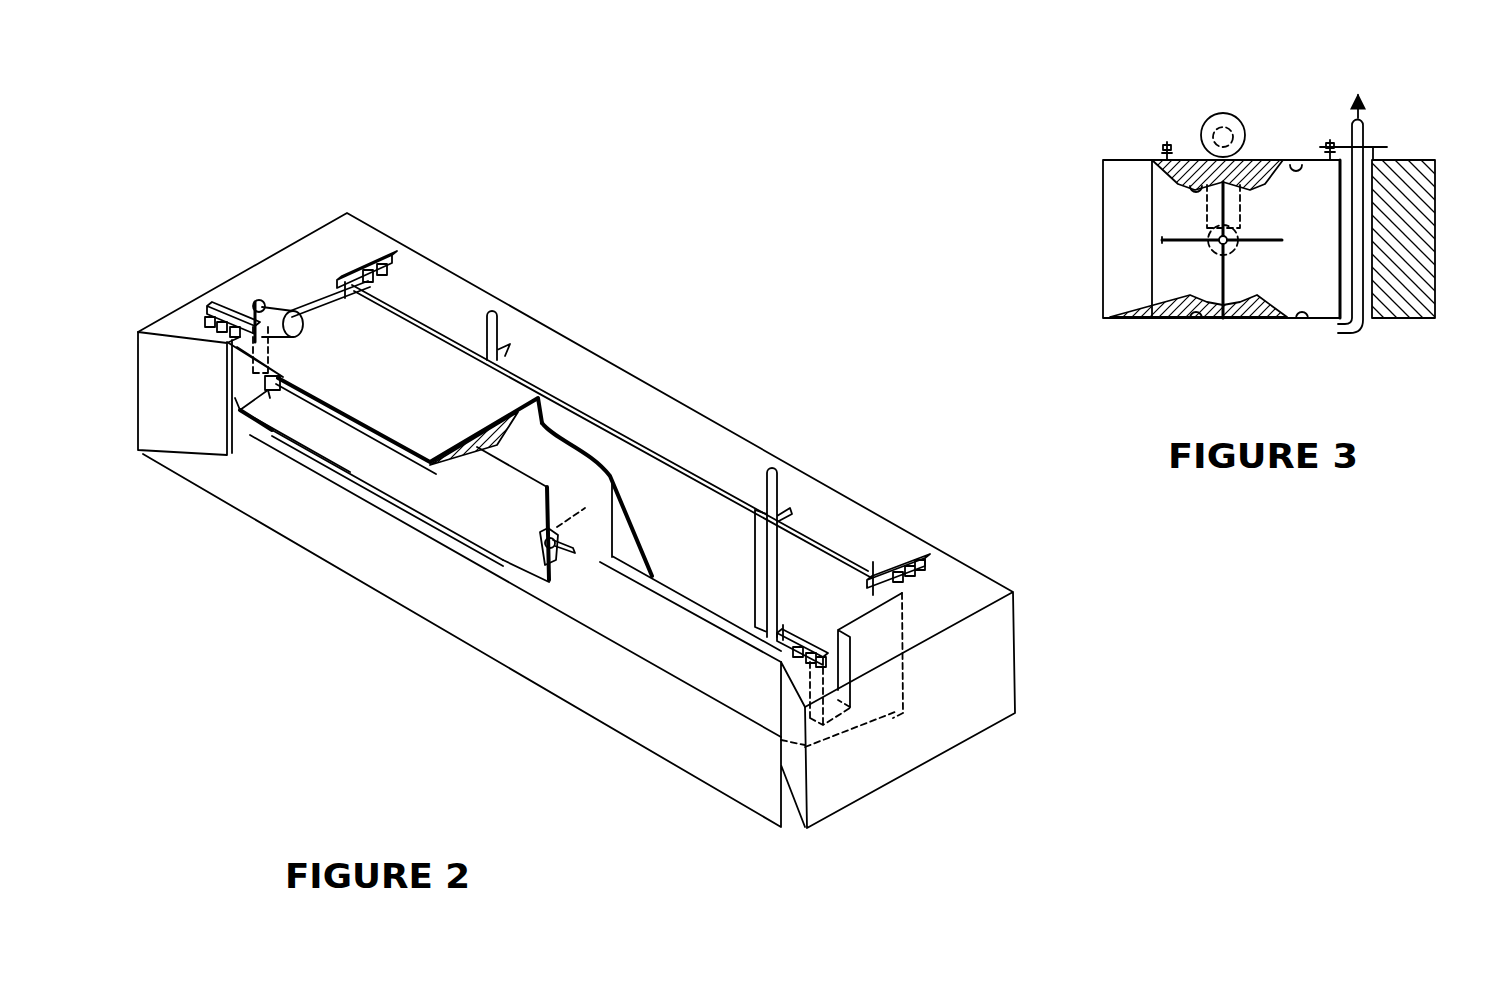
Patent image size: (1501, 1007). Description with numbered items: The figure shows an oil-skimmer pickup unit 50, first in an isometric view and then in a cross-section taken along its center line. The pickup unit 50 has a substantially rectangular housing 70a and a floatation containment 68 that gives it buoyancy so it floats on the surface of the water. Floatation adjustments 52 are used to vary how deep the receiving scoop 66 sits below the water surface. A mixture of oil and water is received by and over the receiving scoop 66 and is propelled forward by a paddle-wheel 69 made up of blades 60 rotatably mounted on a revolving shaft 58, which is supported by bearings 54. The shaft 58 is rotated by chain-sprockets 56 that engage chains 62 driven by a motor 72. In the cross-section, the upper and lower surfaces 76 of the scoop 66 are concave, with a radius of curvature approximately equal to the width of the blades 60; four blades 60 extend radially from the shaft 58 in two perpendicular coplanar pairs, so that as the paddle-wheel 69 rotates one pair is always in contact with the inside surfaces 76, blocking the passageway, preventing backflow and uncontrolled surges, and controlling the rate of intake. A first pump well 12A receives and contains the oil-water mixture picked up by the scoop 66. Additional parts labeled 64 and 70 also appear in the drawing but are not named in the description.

In FIG. 2, the pickup unit 50 is at (732, 350).
In FIG. 3, the pickup unit 50 is at (1395, 70).
In FIG. 2, the floatation adjustments 52 is at (198, 311).
In FIG. 3, the floatation adjustments 52 is at (1162, 142).
In FIG. 2, the bearings 54 is at (496, 336).
In FIG. 2, the chain-sprockets 56 is at (253, 300).
In FIG. 3, the chain-sprockets 56 is at (1233, 118).
In FIG. 2, the revolving shaft 58 is at (572, 555).
In FIG. 3, the revolving shaft 58 is at (1212, 238).
In FIG. 2, the blades 60 is at (315, 447).
In FIG. 3, the blades 60 is at (1173, 249).
In FIG. 3, the chains 62 is at (1243, 219).
In FIG. 2, the pivot bracket 64 is at (273, 387).
In FIG. 2, the receiving scoop 66 is at (390, 560).
In FIG. 2, the floatation containment 68 is at (968, 603).
In FIG. 3, the floatation containment 68 is at (1420, 160).
In FIG. 2, the paddle-wheel 69 is at (368, 490).
In FIG. 3, the supply pipe 70 is at (1337, 180).
In FIG. 2, the housing 70a is at (578, 467).
In FIG. 2, the motor 72 is at (283, 312).
In FIG. 3, the motor 72 is at (1218, 113).
In FIG. 3, the upper and lower surfaces 76 is at (1194, 186).
In FIG. 2, the first pump well 12A is at (710, 623).
In FIG. 3, the first pump well 12A is at (1304, 313).